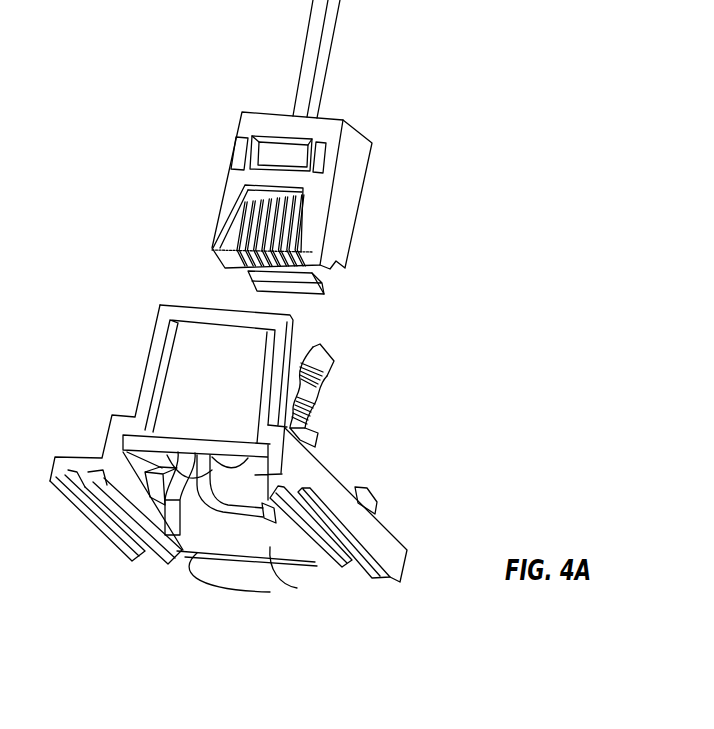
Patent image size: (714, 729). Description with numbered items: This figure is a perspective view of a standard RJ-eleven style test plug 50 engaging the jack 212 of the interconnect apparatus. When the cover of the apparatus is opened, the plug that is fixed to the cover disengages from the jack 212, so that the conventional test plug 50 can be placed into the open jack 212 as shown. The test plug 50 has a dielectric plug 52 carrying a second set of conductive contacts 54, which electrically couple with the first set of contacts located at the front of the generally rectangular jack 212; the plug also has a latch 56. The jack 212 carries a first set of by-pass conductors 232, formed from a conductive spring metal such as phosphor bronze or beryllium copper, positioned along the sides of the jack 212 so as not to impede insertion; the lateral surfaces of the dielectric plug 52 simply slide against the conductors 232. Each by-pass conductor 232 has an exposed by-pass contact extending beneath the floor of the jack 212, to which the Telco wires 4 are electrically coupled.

The test plug 50 is at (380, 194).
The dielectric plug 52 is at (340, 222).
The second set of conductive contacts 54 is at (253, 230).
The latch 56 is at (307, 290).
The jack 212 is at (397, 466).
The first set of by-pass conductors 232 is at (345, 372).
The Telco wires 4 is at (197, 570).